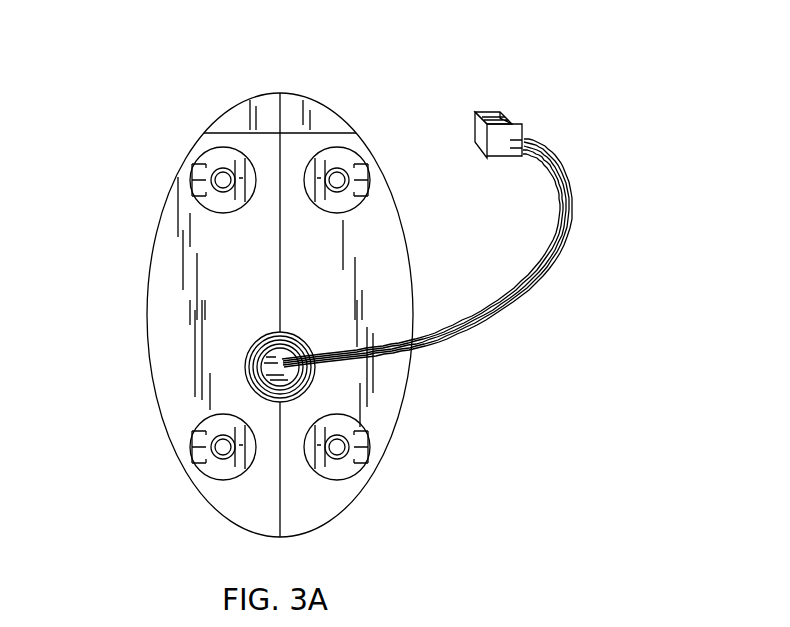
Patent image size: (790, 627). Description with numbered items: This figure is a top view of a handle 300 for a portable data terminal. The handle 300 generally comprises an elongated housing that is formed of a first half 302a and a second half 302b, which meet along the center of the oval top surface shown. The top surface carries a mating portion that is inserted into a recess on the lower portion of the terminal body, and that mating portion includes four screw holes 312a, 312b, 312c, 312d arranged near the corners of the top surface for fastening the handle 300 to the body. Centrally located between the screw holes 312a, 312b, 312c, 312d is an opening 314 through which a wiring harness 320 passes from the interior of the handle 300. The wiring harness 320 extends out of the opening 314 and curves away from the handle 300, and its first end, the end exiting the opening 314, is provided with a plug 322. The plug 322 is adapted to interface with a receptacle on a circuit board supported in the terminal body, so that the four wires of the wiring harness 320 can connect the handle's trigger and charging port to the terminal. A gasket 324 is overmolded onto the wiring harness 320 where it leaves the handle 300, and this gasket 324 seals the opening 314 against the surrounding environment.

The handle 300 is at (217, 56).
The first half 302a is at (150, 257).
The second half 302b is at (410, 255).
The screw hole 312a is at (195, 168).
The screw hole 312b is at (198, 425).
The screw hole 312c is at (370, 181).
The screw hole 312d is at (370, 427).
The opening 314 is at (245, 362).
The wiring harness 320 is at (567, 184).
The plug 322 is at (508, 121).
The gasket 324 is at (303, 370).